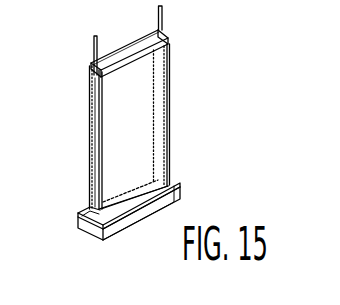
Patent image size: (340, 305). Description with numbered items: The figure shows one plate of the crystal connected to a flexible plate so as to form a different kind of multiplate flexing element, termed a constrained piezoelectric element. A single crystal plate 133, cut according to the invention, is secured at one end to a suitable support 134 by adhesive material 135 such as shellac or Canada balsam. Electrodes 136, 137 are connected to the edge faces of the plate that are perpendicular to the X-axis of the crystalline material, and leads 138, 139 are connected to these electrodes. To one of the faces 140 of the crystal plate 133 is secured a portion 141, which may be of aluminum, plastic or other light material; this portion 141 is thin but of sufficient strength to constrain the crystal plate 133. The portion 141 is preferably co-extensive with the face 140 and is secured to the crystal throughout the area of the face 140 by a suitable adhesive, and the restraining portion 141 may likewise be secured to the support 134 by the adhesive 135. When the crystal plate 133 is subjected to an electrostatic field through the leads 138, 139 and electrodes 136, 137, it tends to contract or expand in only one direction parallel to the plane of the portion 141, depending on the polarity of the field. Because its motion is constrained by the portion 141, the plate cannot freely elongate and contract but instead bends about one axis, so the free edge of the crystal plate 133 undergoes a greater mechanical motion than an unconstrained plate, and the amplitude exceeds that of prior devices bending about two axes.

The crystal plate 133 is at (138, 33).
The support 134 is at (90, 231).
The adhesive material 135 is at (129, 214).
The electrode 136 is at (92, 117).
The electrode 137 is at (166, 97).
The lead 138 is at (93, 50).
The lead 139 is at (163, 16).
The face 140 is at (100, 177).
The portion 141 is at (170, 168).